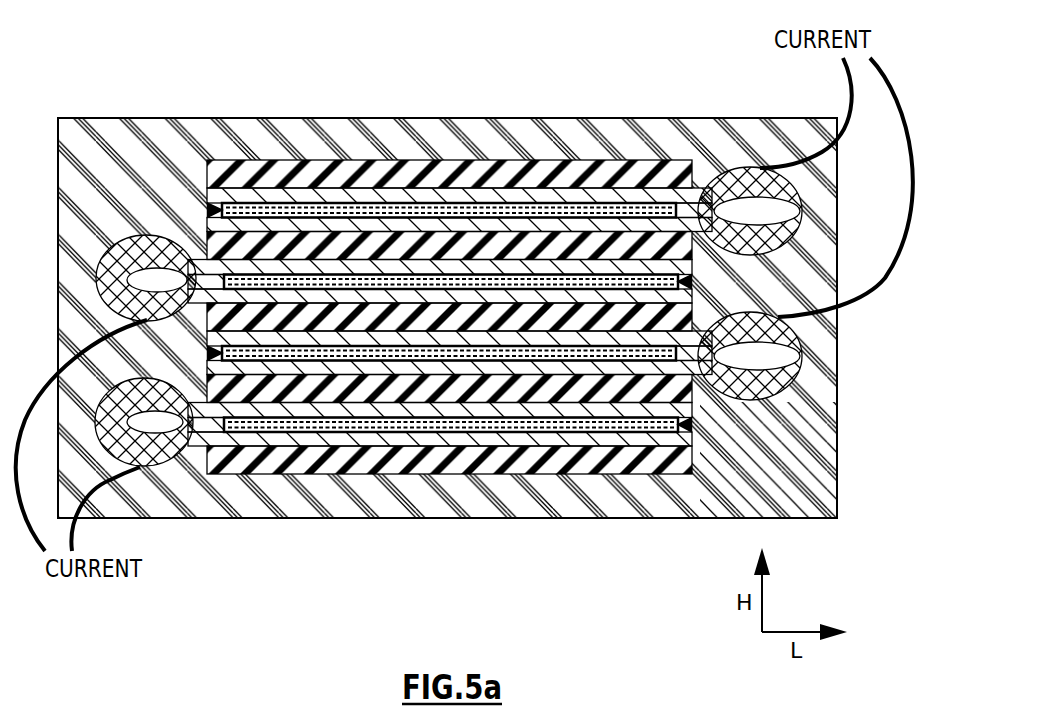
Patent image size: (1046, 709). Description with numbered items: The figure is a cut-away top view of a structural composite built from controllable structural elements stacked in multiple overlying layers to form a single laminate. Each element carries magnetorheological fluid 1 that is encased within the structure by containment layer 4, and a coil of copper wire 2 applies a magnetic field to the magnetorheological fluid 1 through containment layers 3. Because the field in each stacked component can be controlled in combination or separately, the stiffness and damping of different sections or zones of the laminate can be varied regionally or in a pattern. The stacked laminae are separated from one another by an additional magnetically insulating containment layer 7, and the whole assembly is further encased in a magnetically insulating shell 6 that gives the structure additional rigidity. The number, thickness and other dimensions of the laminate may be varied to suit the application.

The magnetorheological fluid 1 is at (300, 212).
The coil of copper wire 2 is at (100, 268).
The containment layer 3 is at (148, 300).
The containment layer 4 is at (206, 262).
The magnetically insulating shell 6 is at (84, 122).
The magnetically insulating containment layer 7 is at (190, 252).